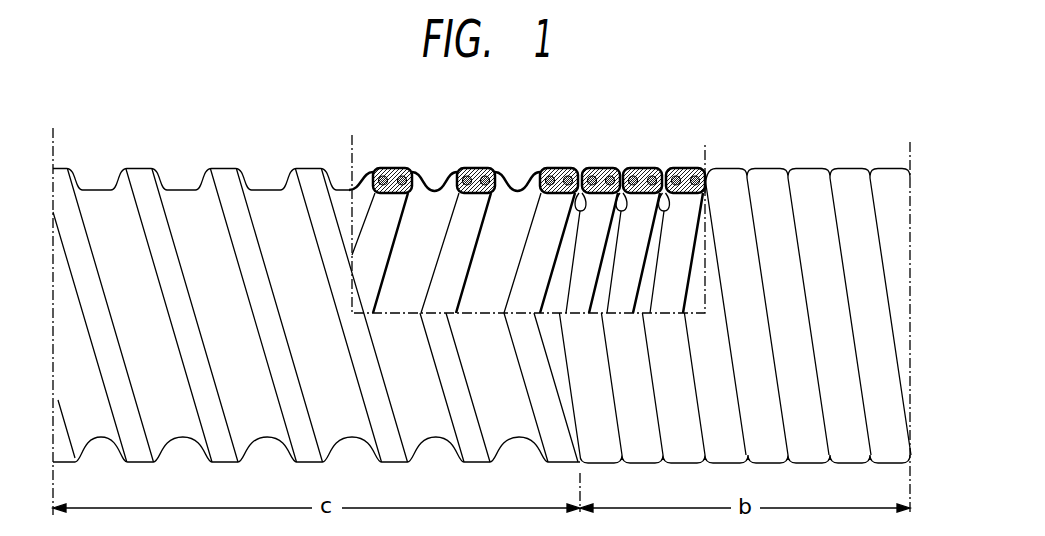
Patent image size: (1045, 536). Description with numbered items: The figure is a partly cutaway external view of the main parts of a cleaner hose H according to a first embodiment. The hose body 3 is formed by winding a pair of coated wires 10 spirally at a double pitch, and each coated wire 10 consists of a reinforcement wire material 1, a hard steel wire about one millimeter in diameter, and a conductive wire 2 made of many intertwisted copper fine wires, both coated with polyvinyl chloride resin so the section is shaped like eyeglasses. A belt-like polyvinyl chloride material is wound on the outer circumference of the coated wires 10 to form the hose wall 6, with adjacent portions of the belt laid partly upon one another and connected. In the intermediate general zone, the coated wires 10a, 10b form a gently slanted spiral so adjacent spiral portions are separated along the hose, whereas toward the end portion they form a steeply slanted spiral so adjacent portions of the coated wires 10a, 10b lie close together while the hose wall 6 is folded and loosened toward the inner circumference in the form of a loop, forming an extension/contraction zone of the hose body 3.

The reinforcement wire material 1 is at (530, 154).
The conductive wire 2 is at (399, 172).
The hose wall 6 is at (428, 188).
The coated wire 10 is at (537, 210).
The coated wire 10a is at (599, 167).
The coated wire 10b is at (654, 167).
The hose body 3 is at (779, 163).
The cleaner hose H is at (860, 152).